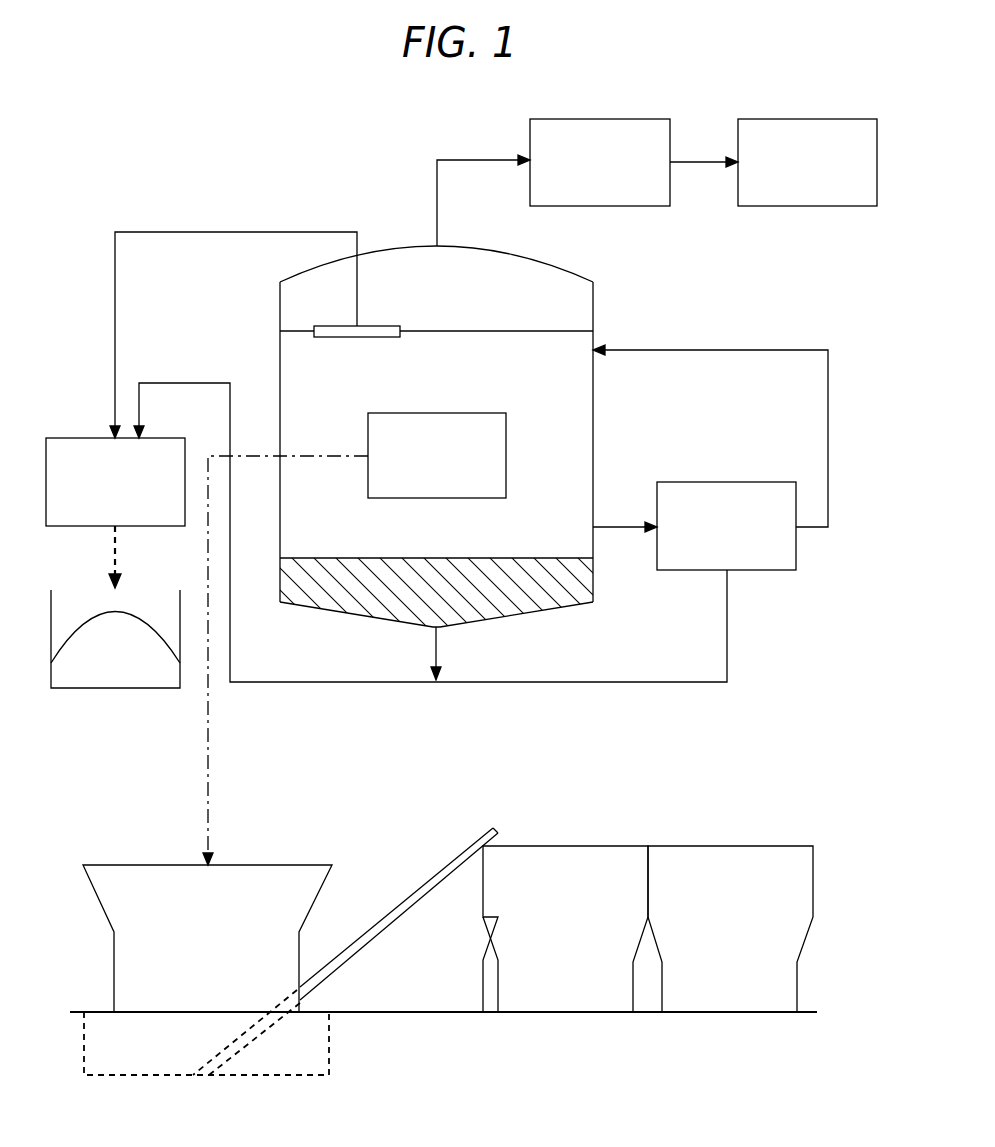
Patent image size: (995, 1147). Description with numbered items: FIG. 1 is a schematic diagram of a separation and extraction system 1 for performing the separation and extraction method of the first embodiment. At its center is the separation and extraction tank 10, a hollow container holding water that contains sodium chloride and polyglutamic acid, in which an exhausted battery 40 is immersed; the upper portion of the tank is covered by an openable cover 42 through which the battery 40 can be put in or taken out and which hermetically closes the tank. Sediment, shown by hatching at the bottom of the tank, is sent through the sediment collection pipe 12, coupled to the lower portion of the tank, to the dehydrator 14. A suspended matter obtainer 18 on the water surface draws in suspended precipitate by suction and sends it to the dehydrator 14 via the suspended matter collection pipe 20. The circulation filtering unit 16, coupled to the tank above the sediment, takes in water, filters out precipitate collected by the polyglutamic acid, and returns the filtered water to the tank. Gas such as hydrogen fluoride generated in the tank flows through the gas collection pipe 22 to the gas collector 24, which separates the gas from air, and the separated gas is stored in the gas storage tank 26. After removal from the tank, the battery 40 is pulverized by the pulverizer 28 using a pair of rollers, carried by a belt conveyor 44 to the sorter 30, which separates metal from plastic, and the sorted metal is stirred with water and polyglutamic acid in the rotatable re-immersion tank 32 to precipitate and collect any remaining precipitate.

The separation and extraction system 1 is at (326, 153).
The separation and extraction tank 10 is at (279, 308).
The sediment collection pipe 12 is at (437, 650).
The dehydrator 14 is at (81, 438).
The circulation filtering unit 16 is at (727, 482).
The suspended matter obtainer 18 is at (385, 326).
The suspended matter collection pipe 20 is at (230, 232).
The gas collection pipe 22 is at (462, 160).
The gas collector 24 is at (603, 118).
The gas storage tank 26 is at (810, 118).
The pulverizer 28 is at (285, 865).
The sorter 30 is at (568, 846).
The re-immersion tank 32 is at (733, 845).
The battery 40 is at (506, 456).
The cover 42 is at (398, 250).
The belt conveyor 44 is at (495, 824).